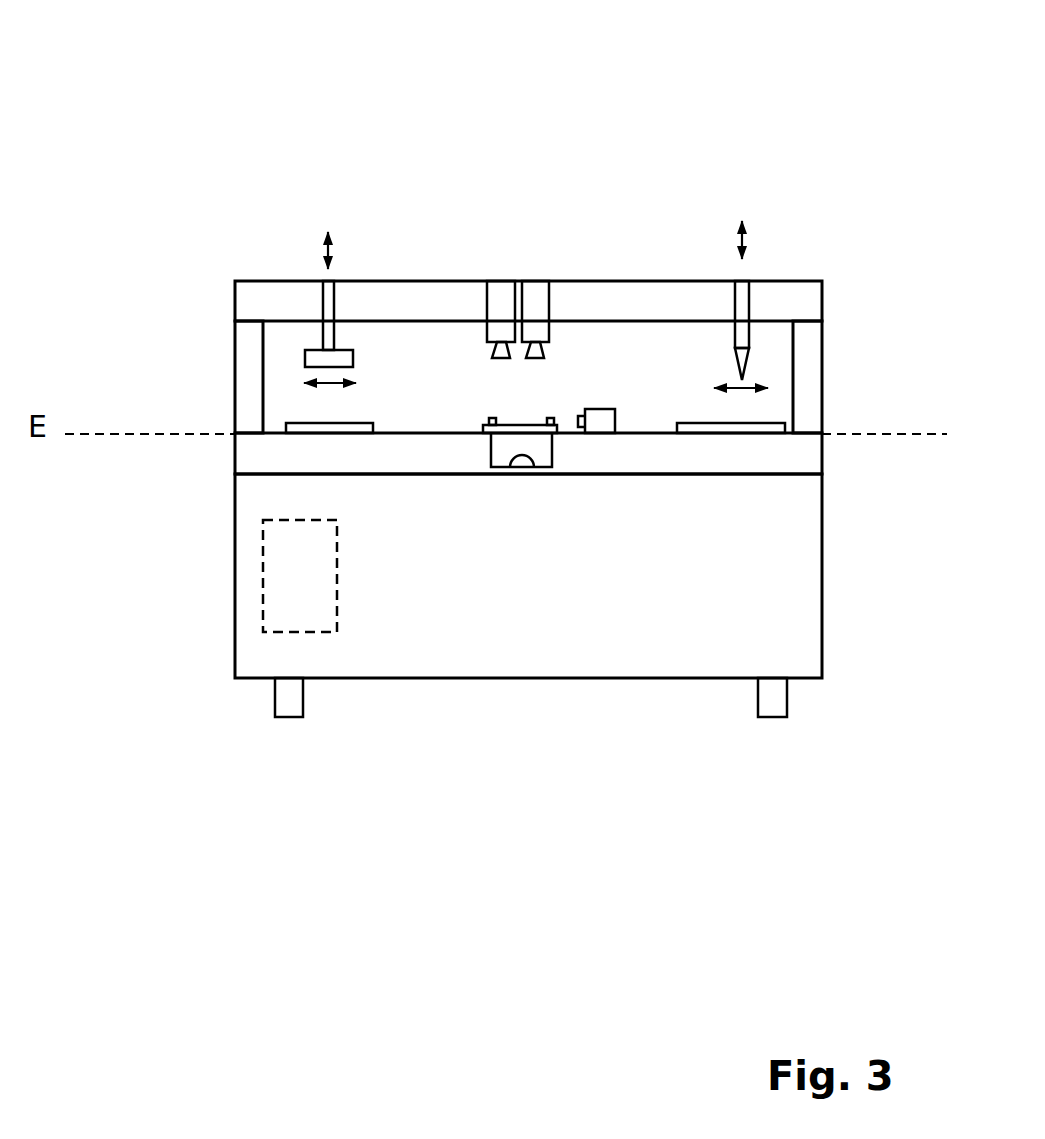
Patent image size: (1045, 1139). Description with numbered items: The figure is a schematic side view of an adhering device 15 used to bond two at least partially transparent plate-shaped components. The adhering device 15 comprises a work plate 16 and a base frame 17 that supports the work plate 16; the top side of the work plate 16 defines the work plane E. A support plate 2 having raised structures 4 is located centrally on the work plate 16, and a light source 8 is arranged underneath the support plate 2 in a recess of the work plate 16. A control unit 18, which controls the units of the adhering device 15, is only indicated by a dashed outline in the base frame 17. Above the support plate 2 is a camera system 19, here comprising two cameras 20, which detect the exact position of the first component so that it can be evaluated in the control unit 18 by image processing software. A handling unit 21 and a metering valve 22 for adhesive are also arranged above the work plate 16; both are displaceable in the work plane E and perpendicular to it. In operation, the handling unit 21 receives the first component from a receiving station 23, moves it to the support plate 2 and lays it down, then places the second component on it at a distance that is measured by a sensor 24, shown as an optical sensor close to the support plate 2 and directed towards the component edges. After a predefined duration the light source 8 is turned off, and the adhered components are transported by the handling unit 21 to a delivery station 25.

The adhering device 15 is at (237, 105).
The work plate 16 is at (807, 458).
The base frame 17 is at (793, 577).
The control unit 18 is at (288, 567).
The camera system 19 is at (498, 280).
The cameras 20 is at (537, 288).
The handling unit 21 is at (312, 260).
The metering valve 22 is at (727, 272).
The receiving station 23 is at (318, 428).
The sensor 24 is at (602, 420).
The delivery station 25 is at (718, 428).
The support plate 2 is at (522, 430).
The raised structures 4 is at (492, 418).
The light source 8 is at (518, 462).